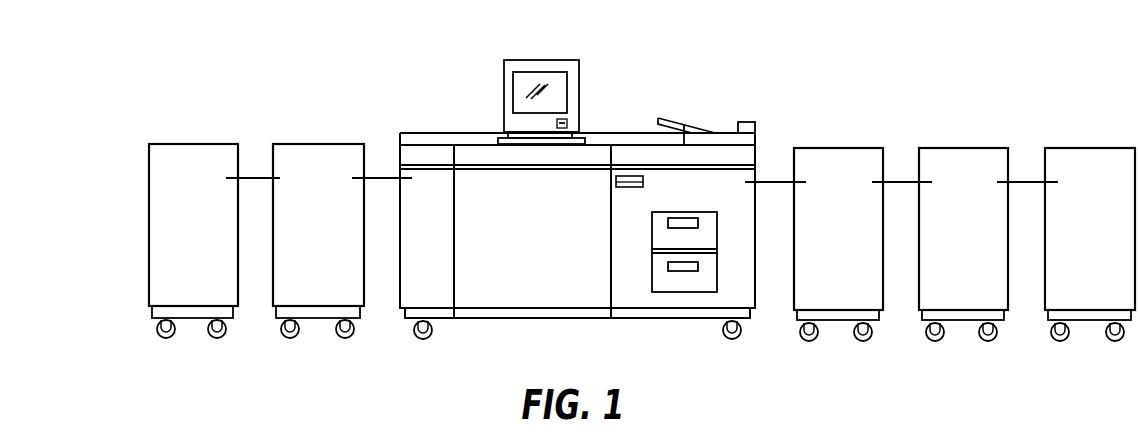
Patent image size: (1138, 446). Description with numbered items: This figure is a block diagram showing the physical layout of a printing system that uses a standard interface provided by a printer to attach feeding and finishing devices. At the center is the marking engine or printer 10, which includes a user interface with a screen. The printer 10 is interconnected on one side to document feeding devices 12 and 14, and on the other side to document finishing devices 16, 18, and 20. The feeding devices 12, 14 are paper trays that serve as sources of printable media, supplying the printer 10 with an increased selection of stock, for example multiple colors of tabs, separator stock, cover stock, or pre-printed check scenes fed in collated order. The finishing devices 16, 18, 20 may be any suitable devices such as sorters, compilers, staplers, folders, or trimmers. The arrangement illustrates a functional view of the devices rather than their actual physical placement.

The printer 10 is at (626, 92).
The document feeding device 12 is at (193, 149).
The document feeding device 14 is at (320, 149).
The document finishing device 16 is at (841, 152).
The document finishing device 18 is at (968, 152).
The document finishing device 20 is at (1091, 152).